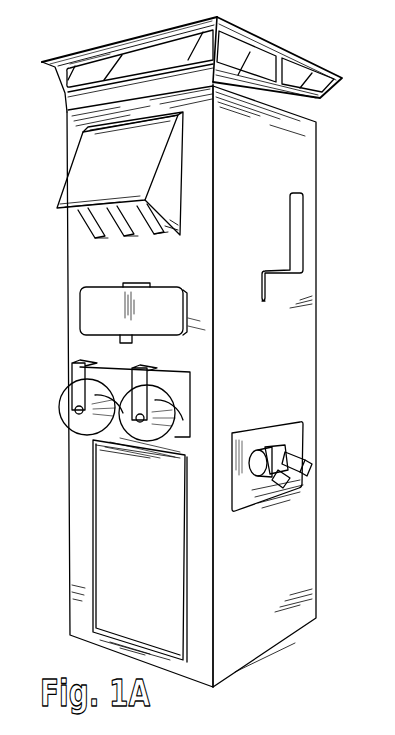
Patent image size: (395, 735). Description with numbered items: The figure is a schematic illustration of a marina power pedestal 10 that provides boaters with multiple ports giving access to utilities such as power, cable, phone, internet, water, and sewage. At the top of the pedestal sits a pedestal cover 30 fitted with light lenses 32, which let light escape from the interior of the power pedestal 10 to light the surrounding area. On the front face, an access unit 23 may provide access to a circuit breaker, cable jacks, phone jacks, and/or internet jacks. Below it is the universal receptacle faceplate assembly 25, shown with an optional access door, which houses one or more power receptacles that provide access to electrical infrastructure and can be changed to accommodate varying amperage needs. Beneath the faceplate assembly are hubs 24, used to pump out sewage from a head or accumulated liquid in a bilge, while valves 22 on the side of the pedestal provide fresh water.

The power pedestal 10 is at (284, 36).
The pedestal cover 30 is at (206, 68).
The light lenses 32 is at (307, 88).
The access unit 23 is at (93, 178).
The universal receptacle faceplate assembly 25 is at (105, 312).
The hubs 24 is at (83, 422).
The valves 22 is at (290, 458).